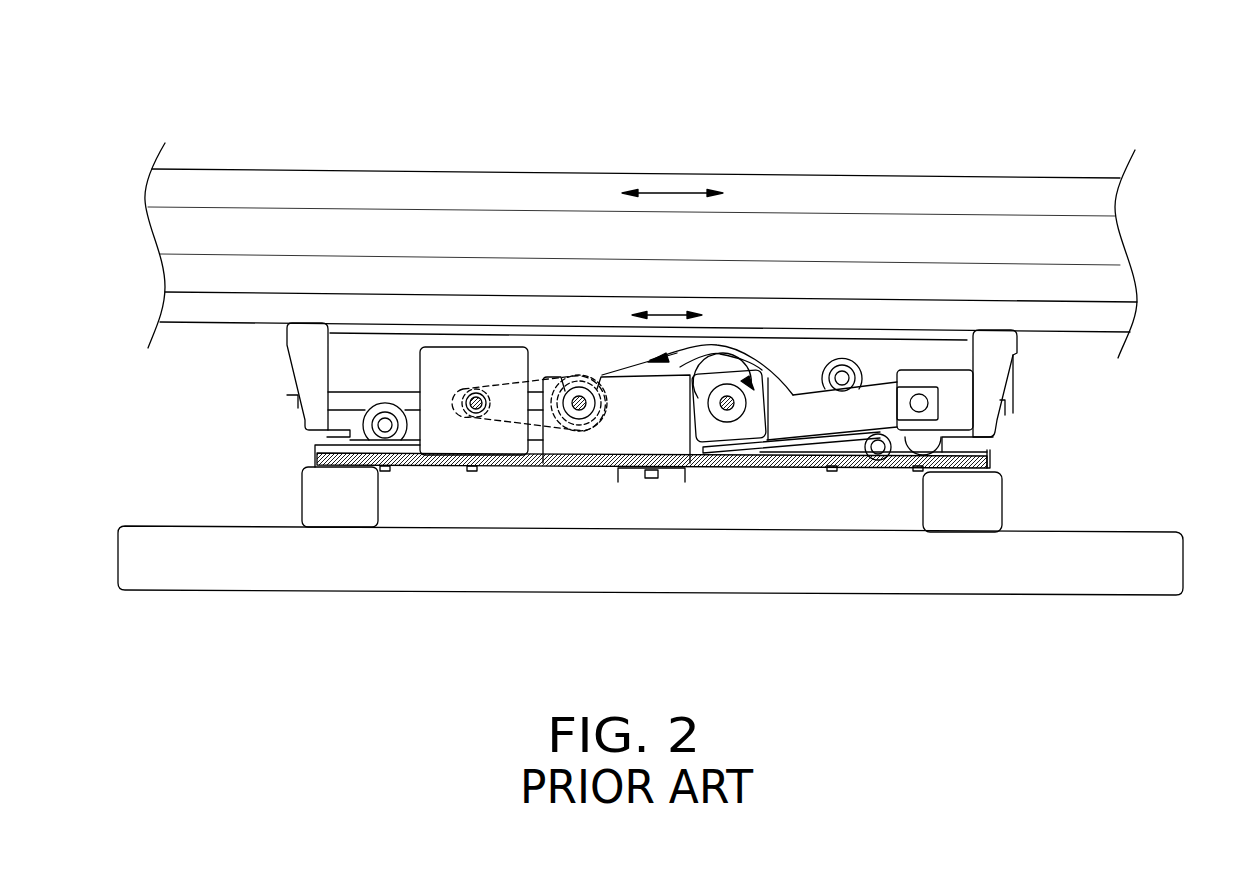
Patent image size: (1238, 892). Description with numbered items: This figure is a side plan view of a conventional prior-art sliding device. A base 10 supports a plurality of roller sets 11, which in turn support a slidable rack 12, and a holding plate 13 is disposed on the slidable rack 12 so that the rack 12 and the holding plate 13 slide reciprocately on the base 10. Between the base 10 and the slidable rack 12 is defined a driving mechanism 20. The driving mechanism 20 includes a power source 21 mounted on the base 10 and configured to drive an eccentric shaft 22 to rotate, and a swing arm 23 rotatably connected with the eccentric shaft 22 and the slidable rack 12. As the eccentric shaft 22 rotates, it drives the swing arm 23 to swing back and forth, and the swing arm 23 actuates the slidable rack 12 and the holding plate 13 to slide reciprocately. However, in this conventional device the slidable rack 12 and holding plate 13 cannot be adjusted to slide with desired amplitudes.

The base 10 is at (1018, 606).
The roller sets 11 is at (338, 420).
The slidable rack 12 is at (1033, 387).
The holding plate 13 is at (958, 166).
The driving mechanism 20 is at (803, 348).
The power source 21 is at (485, 445).
The eccentric shaft 22 is at (715, 420).
The swing arm 23 is at (780, 450).